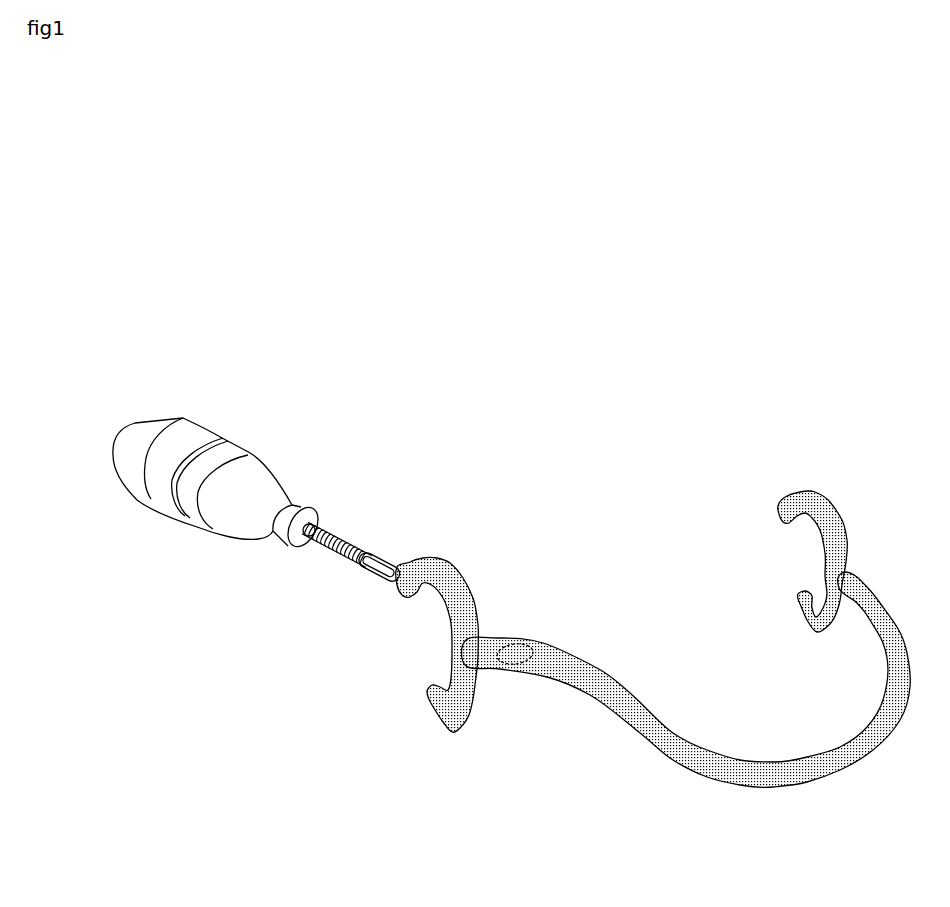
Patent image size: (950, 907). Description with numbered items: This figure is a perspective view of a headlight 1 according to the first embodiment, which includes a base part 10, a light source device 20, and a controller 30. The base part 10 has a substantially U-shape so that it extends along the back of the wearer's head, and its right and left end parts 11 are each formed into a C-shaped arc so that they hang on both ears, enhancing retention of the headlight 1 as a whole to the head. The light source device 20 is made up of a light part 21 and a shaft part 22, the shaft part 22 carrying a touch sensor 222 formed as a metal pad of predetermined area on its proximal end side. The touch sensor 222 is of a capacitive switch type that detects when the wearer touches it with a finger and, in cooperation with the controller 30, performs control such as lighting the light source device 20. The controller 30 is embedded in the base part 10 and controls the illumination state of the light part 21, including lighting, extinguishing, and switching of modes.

The headlight 1 is at (642, 308).
The base part 10 is at (797, 765).
The right and left end parts 11 is at (469, 613).
The controller 30 is at (523, 642).
The light source device 20 is at (245, 530).
The light part 21 is at (100, 480).
The shaft part 22 is at (355, 547).
The touch sensor 222 is at (375, 573).